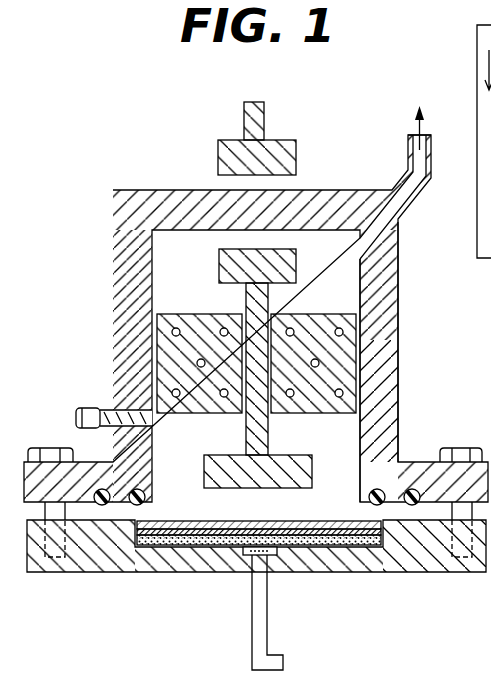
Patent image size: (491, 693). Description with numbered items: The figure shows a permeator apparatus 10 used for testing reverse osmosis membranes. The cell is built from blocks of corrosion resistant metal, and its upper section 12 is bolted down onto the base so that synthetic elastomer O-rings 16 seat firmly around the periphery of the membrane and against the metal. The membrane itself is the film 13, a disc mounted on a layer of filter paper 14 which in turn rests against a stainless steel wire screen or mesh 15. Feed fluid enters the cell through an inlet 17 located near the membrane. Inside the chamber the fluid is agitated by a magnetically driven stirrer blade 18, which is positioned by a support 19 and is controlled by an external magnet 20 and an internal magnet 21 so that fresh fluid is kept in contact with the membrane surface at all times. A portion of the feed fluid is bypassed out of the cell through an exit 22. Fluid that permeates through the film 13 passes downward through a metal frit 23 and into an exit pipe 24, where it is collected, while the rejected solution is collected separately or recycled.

The permeator apparatus 10 is at (104, 346).
The upper section 12 is at (398, 328).
The film 13 is at (384, 522).
The layer of filter paper 14 is at (370, 532).
The stainless steel wire screen 15 is at (336, 544).
The O-rings 16 is at (106, 506).
The inlet 17 is at (64, 418).
The stirrer blade 18 is at (312, 460).
The support 19 is at (311, 314).
The external magnet 20 is at (296, 261).
The internal magnet 21 is at (296, 150).
The exit 22 is at (431, 150).
The metal frit 23 is at (278, 552).
The exit pipe 24 is at (252, 578).